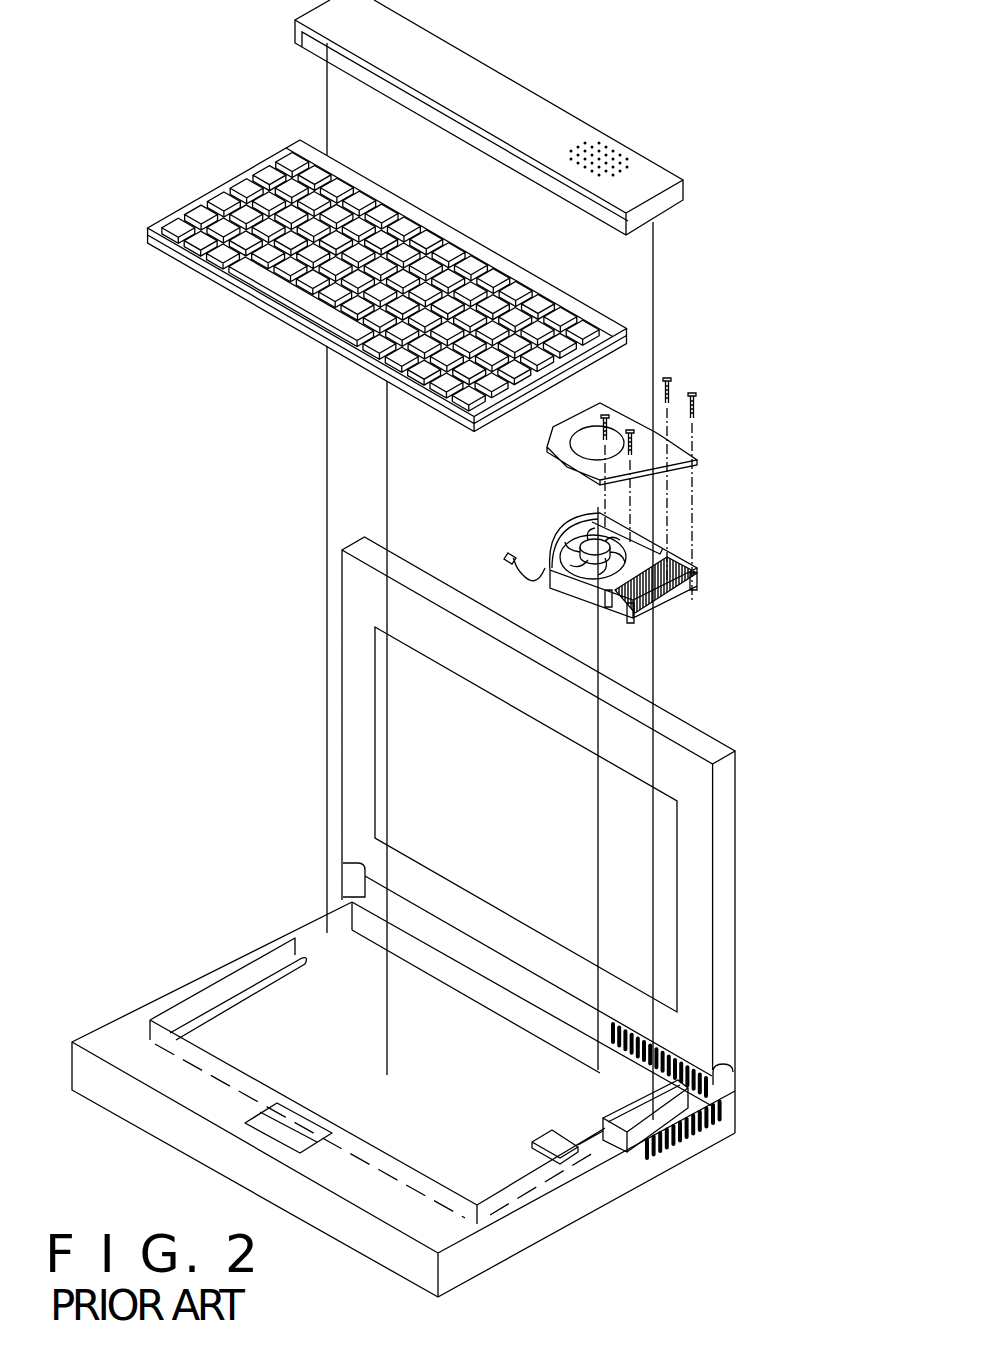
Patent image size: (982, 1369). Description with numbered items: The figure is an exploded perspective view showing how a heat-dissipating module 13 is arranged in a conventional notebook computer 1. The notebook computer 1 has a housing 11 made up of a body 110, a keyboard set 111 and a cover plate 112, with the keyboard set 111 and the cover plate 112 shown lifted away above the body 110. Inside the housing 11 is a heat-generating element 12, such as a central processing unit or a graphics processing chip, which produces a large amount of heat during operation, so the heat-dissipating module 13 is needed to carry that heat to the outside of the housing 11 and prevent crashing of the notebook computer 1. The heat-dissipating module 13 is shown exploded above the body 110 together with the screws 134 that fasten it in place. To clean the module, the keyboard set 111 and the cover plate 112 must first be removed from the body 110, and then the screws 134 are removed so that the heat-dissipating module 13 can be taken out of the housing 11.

The notebook computer 1 is at (455, 648).
The housing 11 is at (615, 1214).
The body 110 is at (593, 1150).
The keyboard set 111 is at (540, 303).
The cover plate 112 is at (631, 180).
The heat-generating element 12 is at (653, 1098).
The heat-dissipating module 13 is at (671, 500).
The screws 134 is at (668, 447).